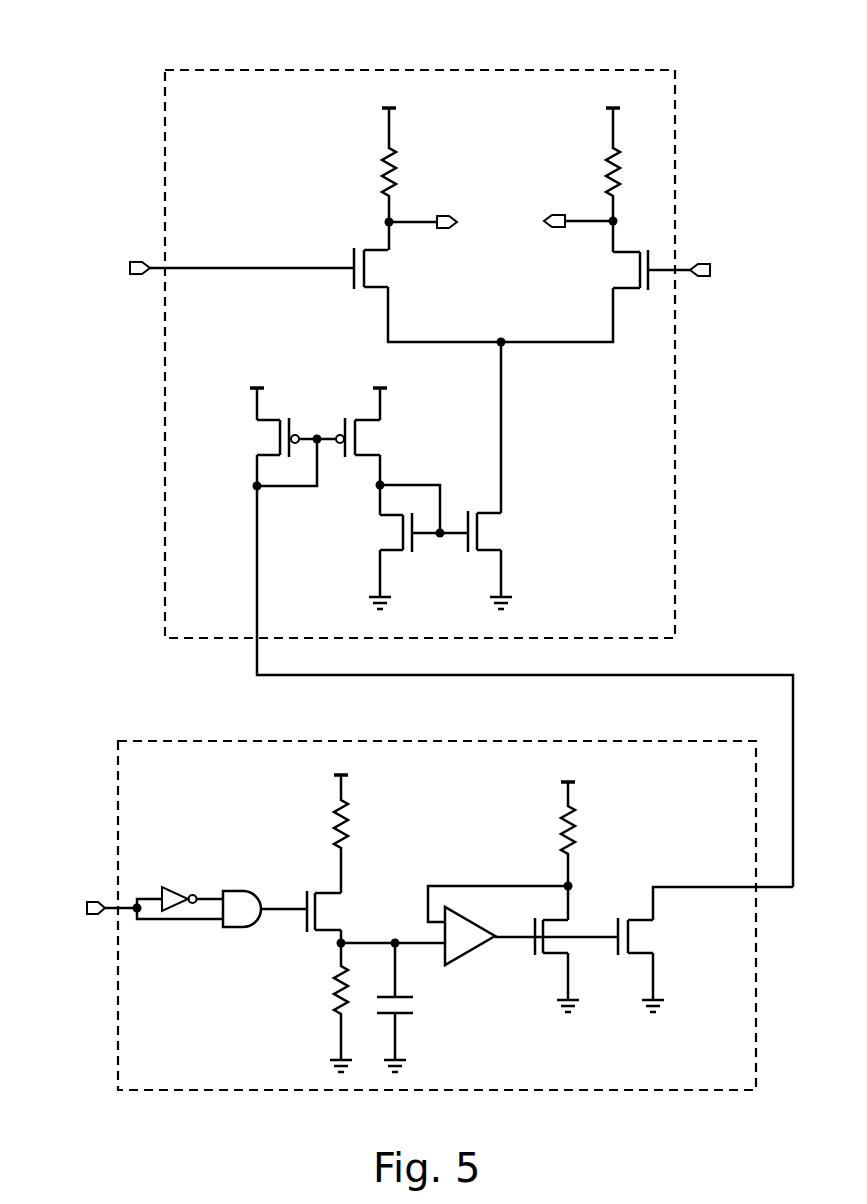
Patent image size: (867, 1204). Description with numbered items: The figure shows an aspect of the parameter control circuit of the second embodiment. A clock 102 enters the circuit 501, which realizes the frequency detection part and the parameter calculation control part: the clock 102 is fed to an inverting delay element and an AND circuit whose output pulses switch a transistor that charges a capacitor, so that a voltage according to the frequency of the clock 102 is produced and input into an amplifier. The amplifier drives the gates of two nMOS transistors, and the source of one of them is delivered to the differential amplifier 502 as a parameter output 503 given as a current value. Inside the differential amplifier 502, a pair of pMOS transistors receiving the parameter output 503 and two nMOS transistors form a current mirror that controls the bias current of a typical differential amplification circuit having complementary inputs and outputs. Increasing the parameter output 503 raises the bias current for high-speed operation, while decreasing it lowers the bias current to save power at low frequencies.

The clock 102 is at (92, 909).
The circuit realizing the frequency detection part and parameter calculation control 501 is at (196, 741).
The differential amplifier 502 is at (676, 172).
The parameter output 503 is at (705, 675).